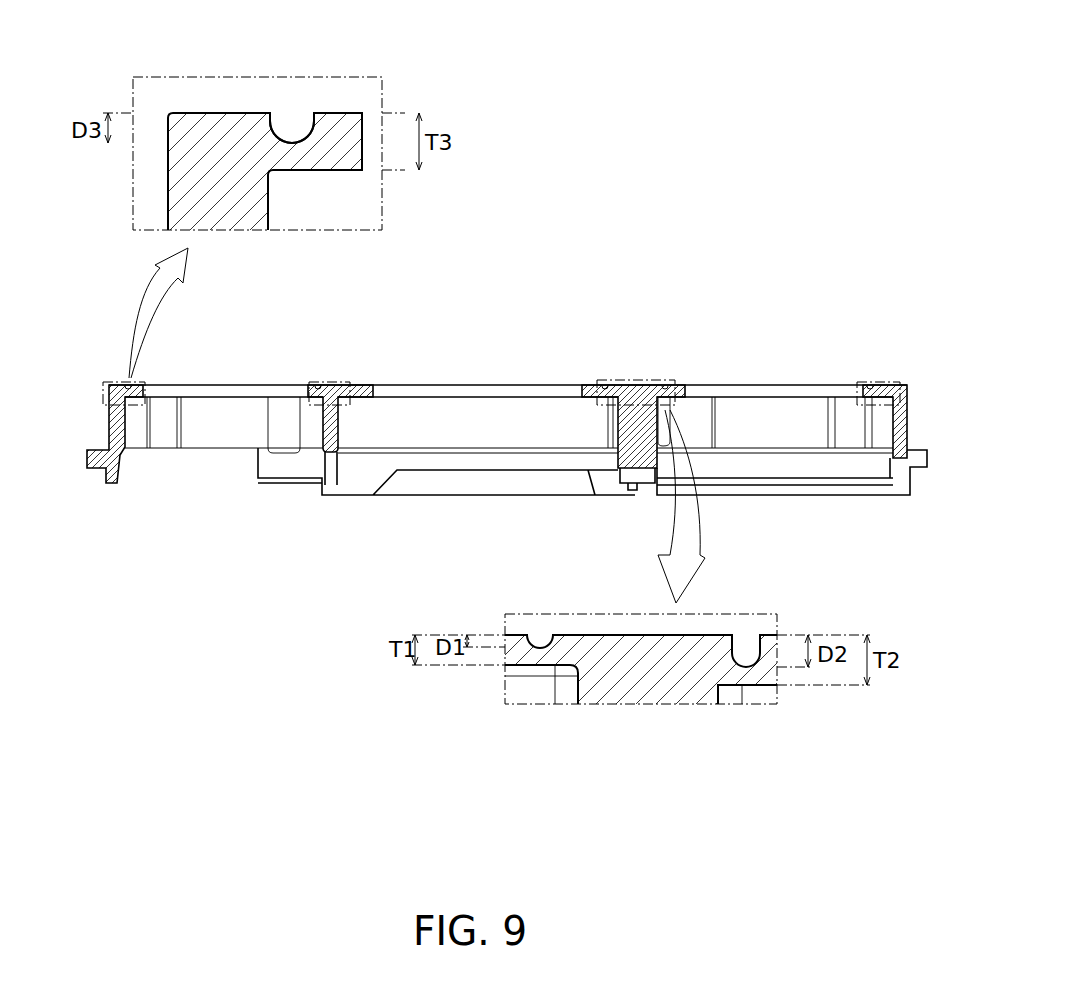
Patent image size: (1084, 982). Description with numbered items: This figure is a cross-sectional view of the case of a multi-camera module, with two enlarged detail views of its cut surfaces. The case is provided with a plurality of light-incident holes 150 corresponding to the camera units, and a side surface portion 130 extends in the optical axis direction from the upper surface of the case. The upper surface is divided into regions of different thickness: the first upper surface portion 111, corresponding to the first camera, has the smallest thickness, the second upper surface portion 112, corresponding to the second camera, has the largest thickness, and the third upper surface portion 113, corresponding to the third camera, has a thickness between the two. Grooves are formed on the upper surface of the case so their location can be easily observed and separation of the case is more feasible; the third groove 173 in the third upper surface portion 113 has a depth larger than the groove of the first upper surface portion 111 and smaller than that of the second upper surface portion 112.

The first upper surface portion 111 is at (513, 653).
The second upper surface portion 112 is at (768, 675).
The third upper surface portion 113 is at (347, 128).
The side surface portion 130 is at (177, 192).
The light-incident holes 150 is at (224, 388).
The third groove 173 is at (293, 133).